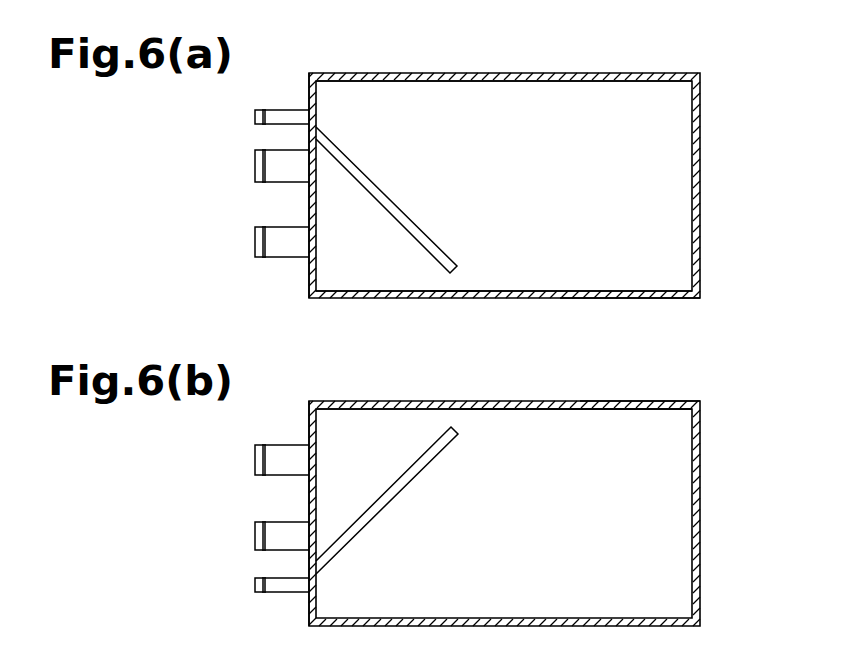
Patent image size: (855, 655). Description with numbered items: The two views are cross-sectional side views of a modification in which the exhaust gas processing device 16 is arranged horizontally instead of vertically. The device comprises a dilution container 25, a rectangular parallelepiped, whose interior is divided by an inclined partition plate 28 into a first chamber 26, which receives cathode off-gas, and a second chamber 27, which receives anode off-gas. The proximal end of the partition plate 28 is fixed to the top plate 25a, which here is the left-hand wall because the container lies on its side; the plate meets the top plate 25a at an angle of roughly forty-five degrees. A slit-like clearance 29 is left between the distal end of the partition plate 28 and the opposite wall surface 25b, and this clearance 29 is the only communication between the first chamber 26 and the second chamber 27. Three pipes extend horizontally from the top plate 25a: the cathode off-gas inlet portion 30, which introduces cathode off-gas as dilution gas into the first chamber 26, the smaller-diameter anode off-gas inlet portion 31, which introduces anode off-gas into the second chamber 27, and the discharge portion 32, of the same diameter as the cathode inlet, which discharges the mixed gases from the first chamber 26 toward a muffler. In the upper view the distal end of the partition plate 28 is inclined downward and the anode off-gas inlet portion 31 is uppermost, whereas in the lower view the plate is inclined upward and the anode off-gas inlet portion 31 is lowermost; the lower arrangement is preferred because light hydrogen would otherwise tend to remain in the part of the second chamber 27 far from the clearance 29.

In FIG. 6A, the exhaust gas processing device 16 is at (724, 78).
In FIG. 6B, the exhaust gas processing device 16 is at (731, 409).
In FIG. 6A, the dilution container 25 is at (722, 171).
In FIG. 6B, the dilution container 25 is at (721, 518).
In FIG. 6A, the top plate 25a is at (310, 277).
In FIG. 6B, the top plate 25a is at (310, 425).
In FIG. 6A, the wall surface 25b is at (595, 291).
In FIG. 6B, the wall surface 25b is at (628, 409).
In FIG. 6A, the first chamber 26 is at (388, 280).
In FIG. 6B, the first chamber 26 is at (418, 422).
In FIG. 6A, the second chamber 27 is at (563, 88).
In FIG. 6B, the second chamber 27 is at (547, 420).
In FIG. 6A, the partition plate 28 is at (405, 216).
In FIG. 6B, the partition plate 28 is at (407, 488).
In FIG. 6A, the clearance 29 is at (457, 280).
In FIG. 6B, the clearance 29 is at (483, 420).
In FIG. 6A, the cathode off-gas inlet portion 30 is at (287, 172).
In FIG. 6B, the cathode off-gas inlet portion 30 is at (286, 530).
In FIG. 6A, the anode off-gas inlet portion 31 is at (282, 115).
In FIG. 6B, the anode off-gas inlet portion 31 is at (283, 586).
In FIG. 6A, the discharge portion 32 is at (288, 247).
In FIG. 6B, the discharge portion 32 is at (286, 456).